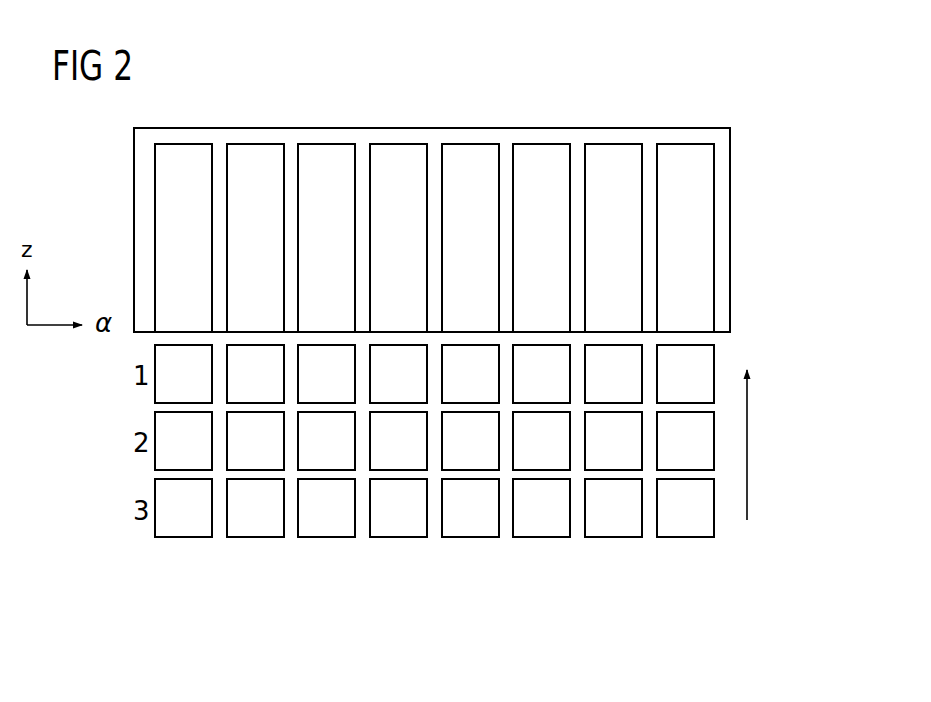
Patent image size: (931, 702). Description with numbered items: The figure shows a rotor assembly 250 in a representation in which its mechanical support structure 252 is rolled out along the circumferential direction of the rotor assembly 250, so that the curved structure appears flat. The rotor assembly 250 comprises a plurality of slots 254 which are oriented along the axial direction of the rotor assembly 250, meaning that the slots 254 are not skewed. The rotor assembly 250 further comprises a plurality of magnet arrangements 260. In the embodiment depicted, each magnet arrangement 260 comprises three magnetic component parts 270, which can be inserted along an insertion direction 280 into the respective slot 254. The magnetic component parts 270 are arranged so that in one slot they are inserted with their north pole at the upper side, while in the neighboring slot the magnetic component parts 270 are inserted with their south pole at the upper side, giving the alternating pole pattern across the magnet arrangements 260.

The rotor assembly 250 is at (470, 190).
The mechanical support structure 252 is at (730, 232).
The slots 254 is at (608, 155).
The magnet arrangements 260 is at (183, 560).
The magnetic component parts 270 is at (715, 357).
The insertion direction 280 is at (747, 445).